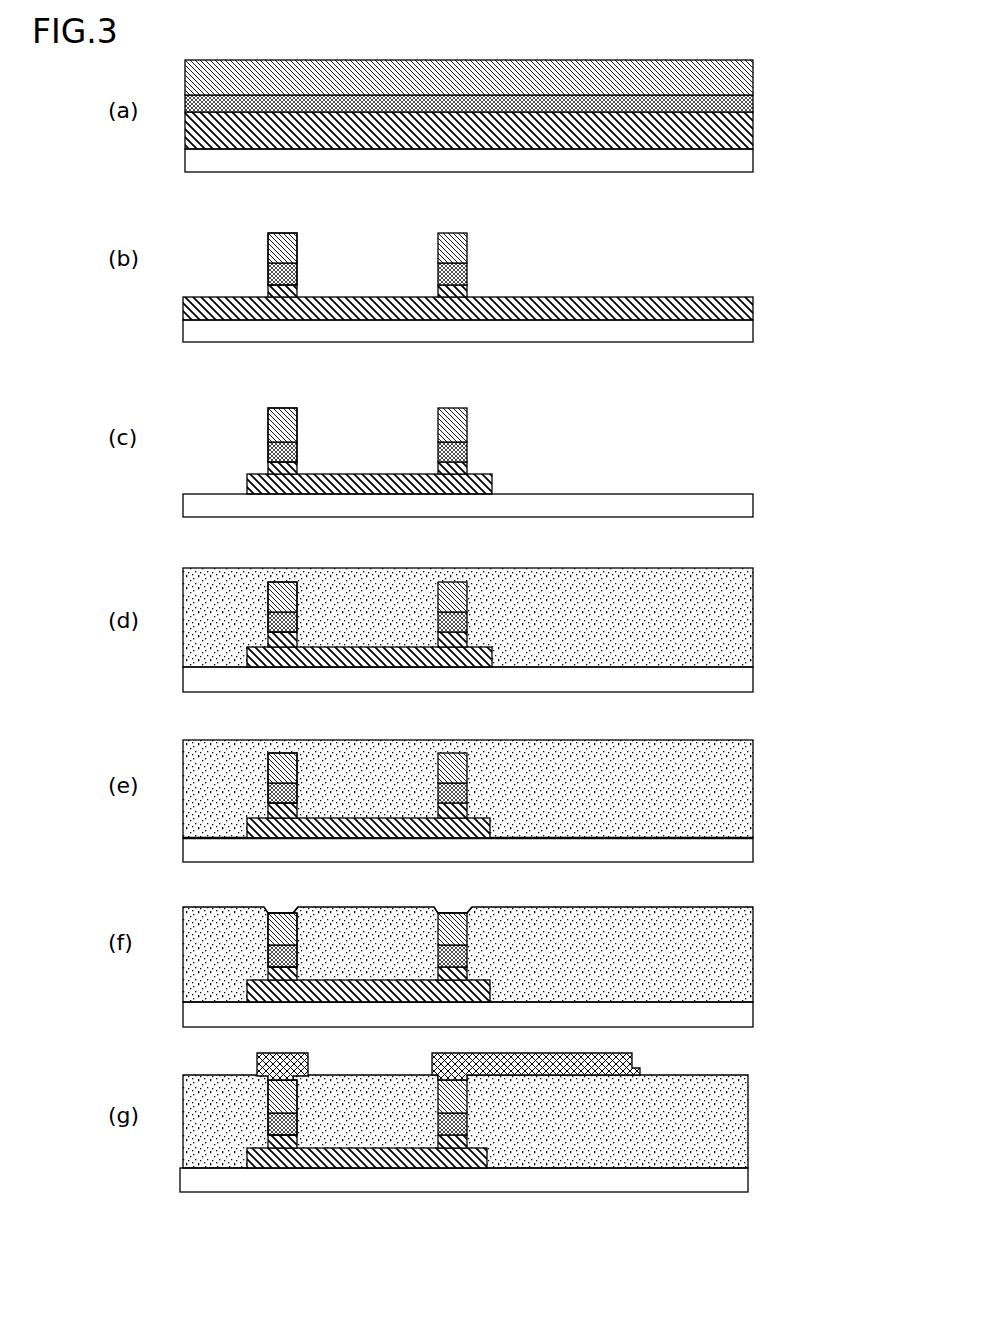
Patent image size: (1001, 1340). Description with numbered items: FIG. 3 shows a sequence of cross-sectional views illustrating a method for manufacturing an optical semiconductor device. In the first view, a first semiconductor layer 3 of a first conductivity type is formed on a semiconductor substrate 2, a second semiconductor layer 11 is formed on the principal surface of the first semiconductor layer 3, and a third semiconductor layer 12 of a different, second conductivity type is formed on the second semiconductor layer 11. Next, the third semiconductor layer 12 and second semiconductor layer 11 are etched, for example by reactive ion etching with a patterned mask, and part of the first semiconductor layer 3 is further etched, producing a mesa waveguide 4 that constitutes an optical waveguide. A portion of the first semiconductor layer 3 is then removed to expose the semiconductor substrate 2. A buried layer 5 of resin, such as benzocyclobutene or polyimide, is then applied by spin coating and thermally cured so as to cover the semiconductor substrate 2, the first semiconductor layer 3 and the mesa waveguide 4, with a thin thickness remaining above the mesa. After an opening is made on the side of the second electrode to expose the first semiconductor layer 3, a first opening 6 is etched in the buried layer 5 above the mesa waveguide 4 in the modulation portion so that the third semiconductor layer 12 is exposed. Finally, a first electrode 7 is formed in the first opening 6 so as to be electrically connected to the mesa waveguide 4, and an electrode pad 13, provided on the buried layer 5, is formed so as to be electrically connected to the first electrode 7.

The semiconductor substrate 2 is at (722, 166).
The first semiconductor layer 3 is at (735, 140).
The mesa waveguide 4 is at (250, 297).
The buried layer 5 is at (647, 612).
The first opening 6 is at (448, 910).
The first electrode 7 is at (260, 1066).
The second semiconductor layer 11 is at (735, 108).
The third semiconductor layer 12 is at (720, 76).
The electrode pad 13 is at (640, 1068).